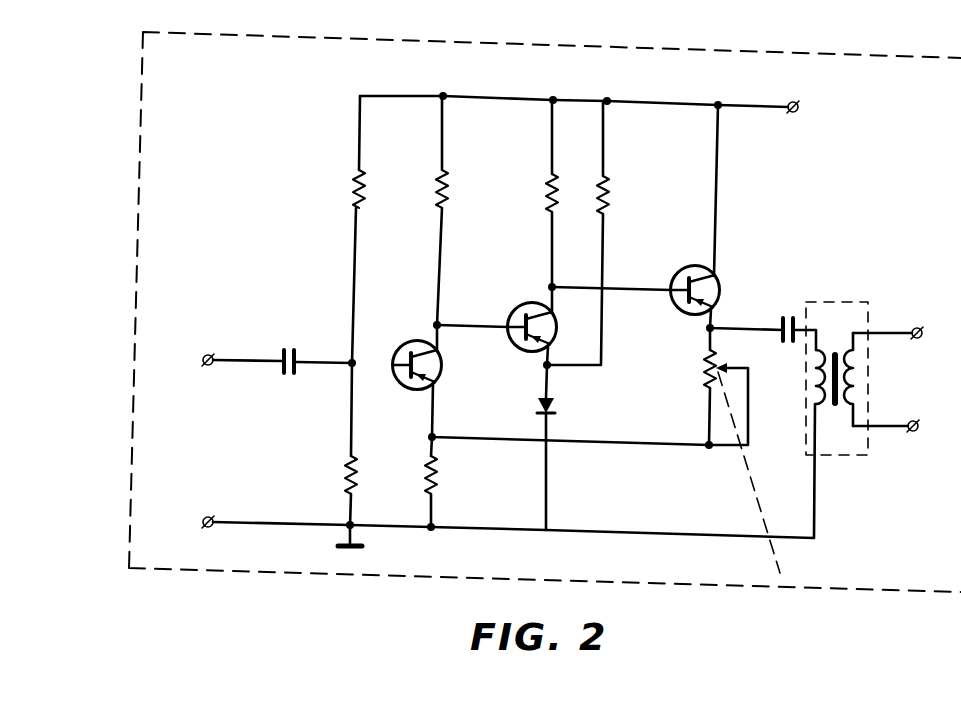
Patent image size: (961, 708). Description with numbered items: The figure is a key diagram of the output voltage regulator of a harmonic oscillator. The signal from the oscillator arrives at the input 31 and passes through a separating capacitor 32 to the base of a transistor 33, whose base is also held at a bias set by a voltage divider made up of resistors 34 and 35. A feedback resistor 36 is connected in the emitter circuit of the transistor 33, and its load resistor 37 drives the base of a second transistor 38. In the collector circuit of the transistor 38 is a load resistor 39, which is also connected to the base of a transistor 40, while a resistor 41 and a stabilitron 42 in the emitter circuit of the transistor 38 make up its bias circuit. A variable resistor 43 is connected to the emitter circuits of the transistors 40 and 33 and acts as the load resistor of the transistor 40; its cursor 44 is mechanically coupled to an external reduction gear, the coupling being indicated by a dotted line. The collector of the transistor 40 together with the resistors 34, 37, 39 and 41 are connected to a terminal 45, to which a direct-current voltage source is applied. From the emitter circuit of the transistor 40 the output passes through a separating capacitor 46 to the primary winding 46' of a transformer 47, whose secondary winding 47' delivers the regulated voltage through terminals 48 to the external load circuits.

The input 31 is at (208, 367).
The separating capacitor 32 is at (292, 350).
The transistor 33 is at (401, 349).
The resistor 34 is at (366, 194).
The resistor 35 is at (358, 476).
The feedback resistor 36 is at (438, 476).
The load resistor 37 is at (449, 186).
The transistor 38 is at (512, 312).
The load resistor 39 is at (546, 193).
The transistor 40 is at (679, 278).
The resistor 41 is at (611, 194).
The stabilitron 42 is at (537, 398).
The variable resistor 43 is at (707, 380).
The cursor 44 is at (722, 366).
The terminal 45 is at (799, 112).
The separating capacitor 46 is at (772, 314).
The transformer 47 is at (841, 353).
The primary winding 46' is at (796, 389).
The secondary winding 47' is at (879, 379).
The terminals 48 is at (920, 339).